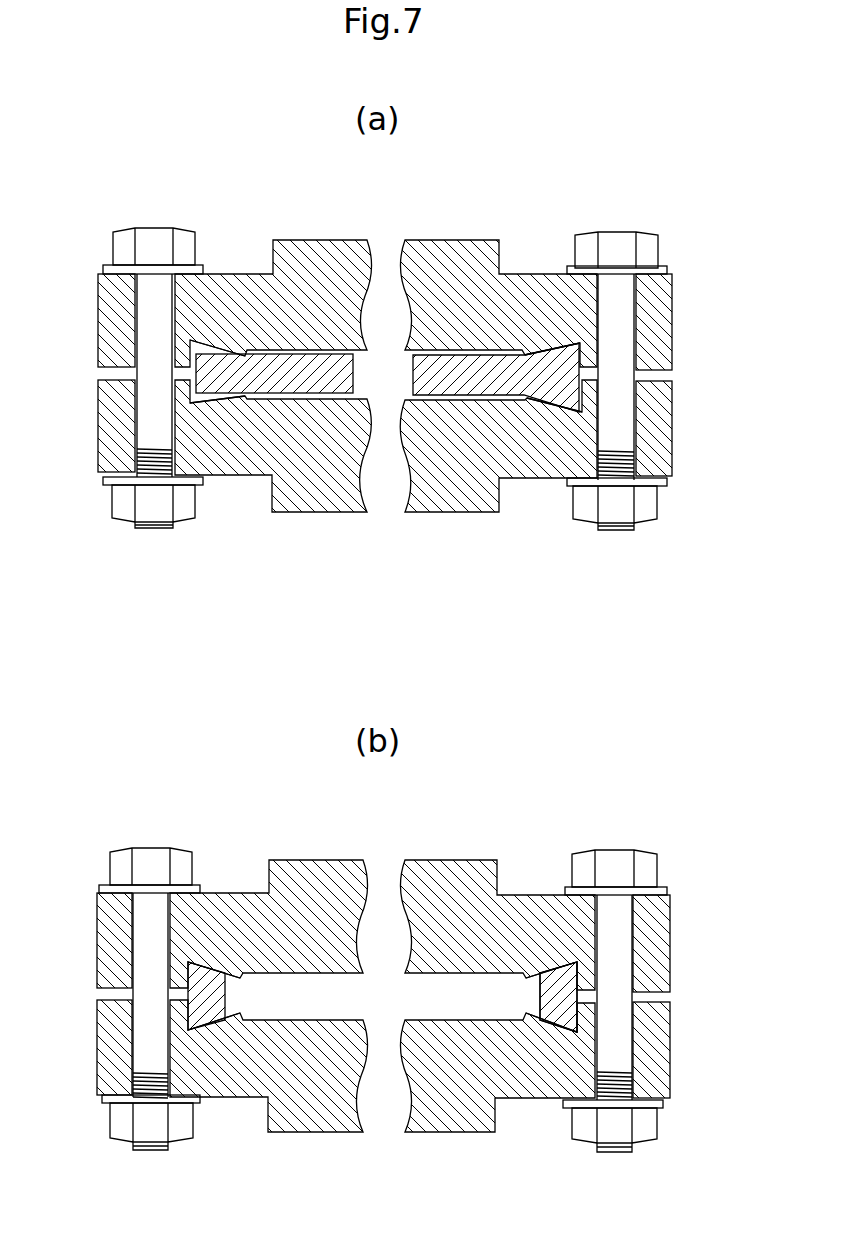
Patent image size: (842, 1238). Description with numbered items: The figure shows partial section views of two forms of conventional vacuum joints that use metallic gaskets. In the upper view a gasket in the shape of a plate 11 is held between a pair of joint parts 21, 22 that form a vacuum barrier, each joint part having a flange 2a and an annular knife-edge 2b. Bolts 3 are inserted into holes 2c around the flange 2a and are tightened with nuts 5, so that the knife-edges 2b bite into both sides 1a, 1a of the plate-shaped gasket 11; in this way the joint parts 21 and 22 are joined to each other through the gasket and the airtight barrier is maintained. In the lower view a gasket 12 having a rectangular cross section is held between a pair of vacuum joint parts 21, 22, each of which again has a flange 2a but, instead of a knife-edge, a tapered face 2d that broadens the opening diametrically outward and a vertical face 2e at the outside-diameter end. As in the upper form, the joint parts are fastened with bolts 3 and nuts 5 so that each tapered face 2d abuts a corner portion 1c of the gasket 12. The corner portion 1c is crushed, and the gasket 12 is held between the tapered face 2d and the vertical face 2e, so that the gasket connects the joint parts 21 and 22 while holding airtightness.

The bolt 3 is at (153, 228).
The nut 5 is at (105, 505).
The joint part 21 is at (238, 893).
The joint part 22 is at (522, 477).
The flange 2a is at (657, 293).
The annular knife-edge 2b is at (527, 353).
The hole 2c is at (128, 326).
The tapered face 2d is at (197, 978).
The vertical face 2e is at (178, 982).
The side of the plate-shaped gasket 1a is at (265, 350).
The plate-shaped gasket 11 is at (557, 362).
The gasket with rectangular cross section 12 is at (555, 985).
The corner portion 1c is at (537, 973).